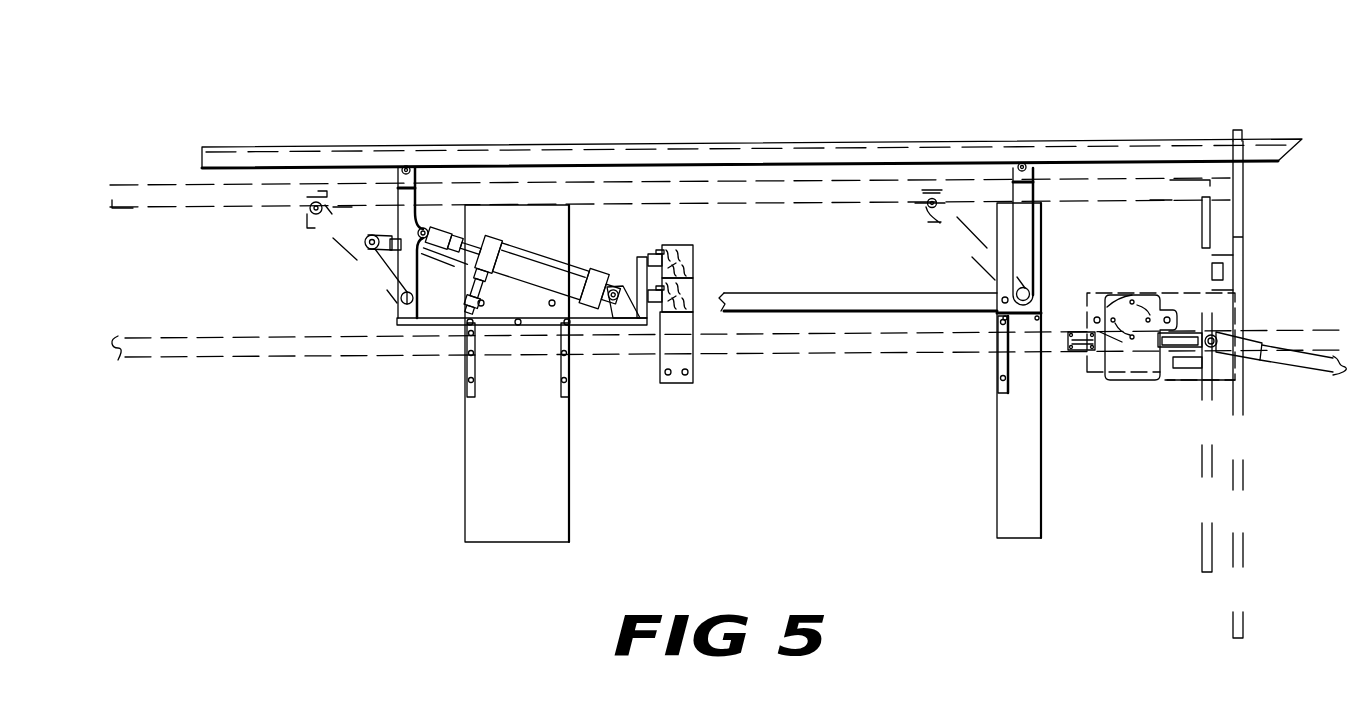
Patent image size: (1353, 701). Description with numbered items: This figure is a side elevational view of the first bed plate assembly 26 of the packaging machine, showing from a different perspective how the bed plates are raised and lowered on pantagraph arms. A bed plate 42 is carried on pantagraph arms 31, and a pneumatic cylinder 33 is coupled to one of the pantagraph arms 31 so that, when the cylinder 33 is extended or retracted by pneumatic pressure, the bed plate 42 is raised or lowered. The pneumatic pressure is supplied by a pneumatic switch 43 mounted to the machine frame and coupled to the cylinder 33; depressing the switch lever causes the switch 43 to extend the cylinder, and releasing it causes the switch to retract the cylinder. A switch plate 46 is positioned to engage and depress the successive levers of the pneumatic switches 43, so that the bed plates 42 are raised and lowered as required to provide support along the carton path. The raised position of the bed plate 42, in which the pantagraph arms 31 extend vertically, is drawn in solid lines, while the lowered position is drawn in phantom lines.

The first bed plate assembly 26 is at (763, 110).
The bed plate 42 is at (592, 150).
The pantagraph arms 31 is at (405, 267).
The pneumatic cylinder 33 is at (545, 258).
The pneumatic switch 43 is at (693, 285).
The switch plate 46 is at (637, 303).